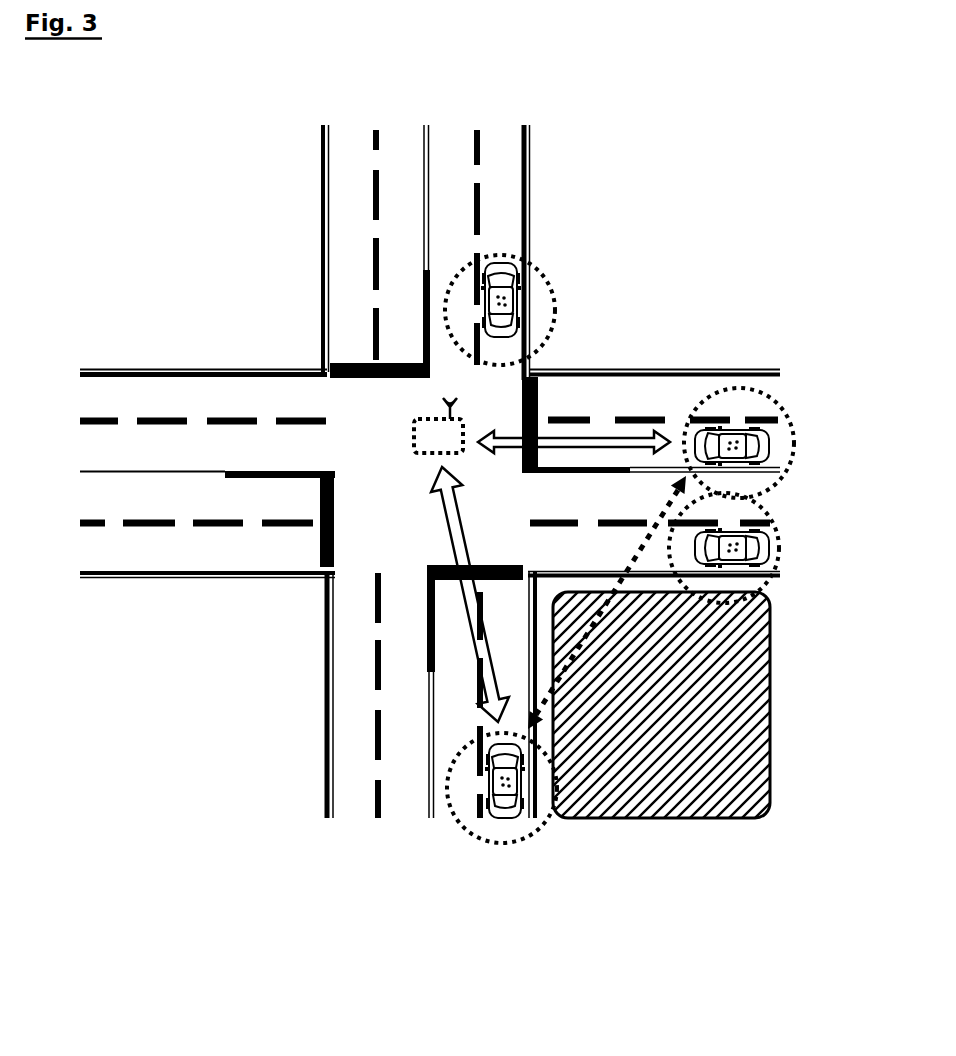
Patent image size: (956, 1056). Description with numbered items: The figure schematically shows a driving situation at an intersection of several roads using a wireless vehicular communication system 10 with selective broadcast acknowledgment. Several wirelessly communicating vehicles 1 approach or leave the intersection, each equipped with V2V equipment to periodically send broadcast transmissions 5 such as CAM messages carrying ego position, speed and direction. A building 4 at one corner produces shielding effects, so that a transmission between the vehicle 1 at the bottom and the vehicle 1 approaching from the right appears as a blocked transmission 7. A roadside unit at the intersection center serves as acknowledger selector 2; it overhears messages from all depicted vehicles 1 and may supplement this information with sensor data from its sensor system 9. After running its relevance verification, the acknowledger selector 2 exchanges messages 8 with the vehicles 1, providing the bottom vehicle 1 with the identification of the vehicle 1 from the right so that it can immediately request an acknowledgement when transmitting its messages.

The vehicle 1 is at (524, 265).
The acknowledger selector 2 is at (414, 422).
The building 4 is at (772, 650).
The broadcast transmission 5 is at (556, 302).
The blocked transmission 7 is at (633, 550).
The communication link 8 is at (598, 432).
The sensor system 9 is at (458, 405).
The wireless vehicular communication system 10 is at (154, 214).